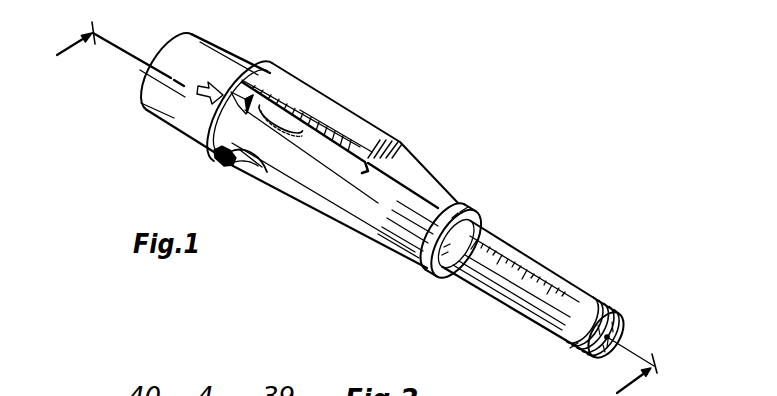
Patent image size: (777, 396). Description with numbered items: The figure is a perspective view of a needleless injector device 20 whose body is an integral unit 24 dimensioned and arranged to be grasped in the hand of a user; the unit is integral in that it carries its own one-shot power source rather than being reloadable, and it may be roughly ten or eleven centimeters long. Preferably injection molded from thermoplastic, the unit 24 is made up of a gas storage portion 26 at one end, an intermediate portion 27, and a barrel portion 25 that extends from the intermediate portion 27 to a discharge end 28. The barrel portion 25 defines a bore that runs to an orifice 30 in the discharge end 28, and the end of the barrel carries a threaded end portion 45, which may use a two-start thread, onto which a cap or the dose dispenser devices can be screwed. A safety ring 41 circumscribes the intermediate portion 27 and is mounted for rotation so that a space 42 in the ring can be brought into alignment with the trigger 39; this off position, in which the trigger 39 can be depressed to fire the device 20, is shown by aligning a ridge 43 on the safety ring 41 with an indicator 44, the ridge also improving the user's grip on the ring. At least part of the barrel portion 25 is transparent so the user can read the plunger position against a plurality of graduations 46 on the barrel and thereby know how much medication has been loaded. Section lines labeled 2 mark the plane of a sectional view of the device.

The section line 2- 2 is at (364, 197).
The injector device 20 is at (550, 125).
The integral unit 24 is at (168, 33).
The barrel portion 25 is at (688, 286).
The gas storage portion 26 is at (307, 53).
The intermediate portion 27 is at (527, 195).
The discharge end 28 is at (619, 329).
The orifice 30 is at (607, 337).
The trigger 39 is at (347, 132).
The safety ring 41 is at (267, 173).
The space 42 is at (237, 127).
The ridge 43 is at (223, 160).
The indicator 44 is at (198, 91).
The threaded end portion 45 is at (572, 347).
The graduations 46 is at (483, 246).